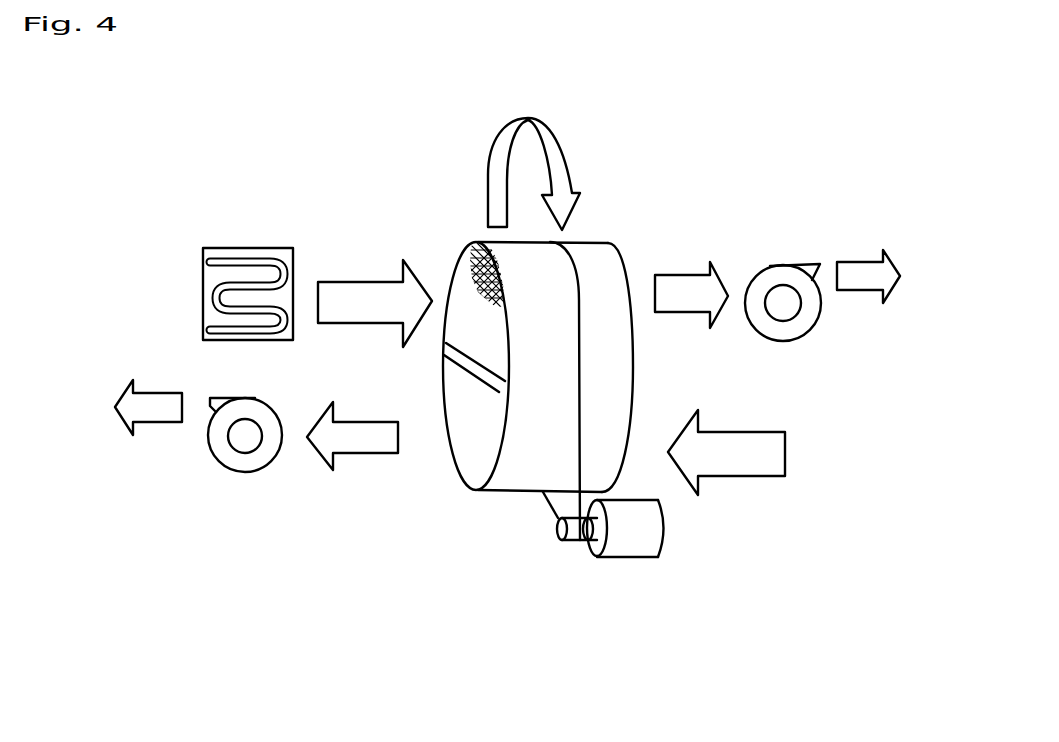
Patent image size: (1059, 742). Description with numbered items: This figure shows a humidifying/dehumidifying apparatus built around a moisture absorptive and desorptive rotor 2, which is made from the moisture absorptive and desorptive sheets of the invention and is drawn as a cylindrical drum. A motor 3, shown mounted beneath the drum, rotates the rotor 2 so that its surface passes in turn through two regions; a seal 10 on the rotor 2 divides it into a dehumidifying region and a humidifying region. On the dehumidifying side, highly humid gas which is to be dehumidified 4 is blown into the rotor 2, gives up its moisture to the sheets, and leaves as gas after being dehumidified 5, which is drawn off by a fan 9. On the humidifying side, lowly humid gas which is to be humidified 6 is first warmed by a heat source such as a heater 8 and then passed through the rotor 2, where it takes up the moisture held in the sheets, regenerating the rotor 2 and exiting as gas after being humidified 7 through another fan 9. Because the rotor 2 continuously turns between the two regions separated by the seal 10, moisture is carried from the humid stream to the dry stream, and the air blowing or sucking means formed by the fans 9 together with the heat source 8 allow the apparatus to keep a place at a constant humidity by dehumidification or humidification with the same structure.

The moisture absorptive and desorptive rotor 2 is at (577, 237).
The motor 3 is at (633, 545).
The highly humid gas which is to be dehumidified 4 is at (753, 476).
The gas after being dehumidified 5 is at (350, 453).
The lowly humid gas which is to be humidified 6 is at (380, 283).
The gas after being humidified 7 is at (675, 273).
The heat source such as heater 8 is at (240, 250).
The fan 9 is at (217, 468).
The seal dividing into dehumidifying and humidifying regions 10 is at (473, 382).